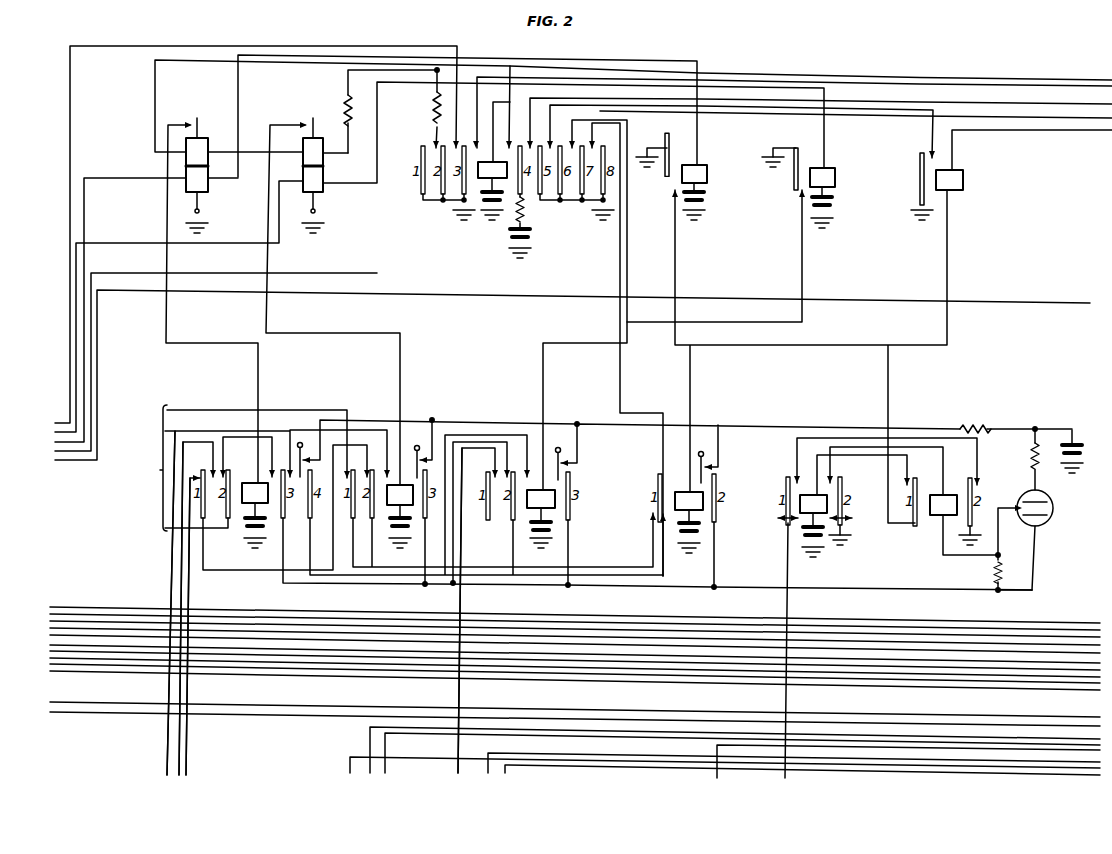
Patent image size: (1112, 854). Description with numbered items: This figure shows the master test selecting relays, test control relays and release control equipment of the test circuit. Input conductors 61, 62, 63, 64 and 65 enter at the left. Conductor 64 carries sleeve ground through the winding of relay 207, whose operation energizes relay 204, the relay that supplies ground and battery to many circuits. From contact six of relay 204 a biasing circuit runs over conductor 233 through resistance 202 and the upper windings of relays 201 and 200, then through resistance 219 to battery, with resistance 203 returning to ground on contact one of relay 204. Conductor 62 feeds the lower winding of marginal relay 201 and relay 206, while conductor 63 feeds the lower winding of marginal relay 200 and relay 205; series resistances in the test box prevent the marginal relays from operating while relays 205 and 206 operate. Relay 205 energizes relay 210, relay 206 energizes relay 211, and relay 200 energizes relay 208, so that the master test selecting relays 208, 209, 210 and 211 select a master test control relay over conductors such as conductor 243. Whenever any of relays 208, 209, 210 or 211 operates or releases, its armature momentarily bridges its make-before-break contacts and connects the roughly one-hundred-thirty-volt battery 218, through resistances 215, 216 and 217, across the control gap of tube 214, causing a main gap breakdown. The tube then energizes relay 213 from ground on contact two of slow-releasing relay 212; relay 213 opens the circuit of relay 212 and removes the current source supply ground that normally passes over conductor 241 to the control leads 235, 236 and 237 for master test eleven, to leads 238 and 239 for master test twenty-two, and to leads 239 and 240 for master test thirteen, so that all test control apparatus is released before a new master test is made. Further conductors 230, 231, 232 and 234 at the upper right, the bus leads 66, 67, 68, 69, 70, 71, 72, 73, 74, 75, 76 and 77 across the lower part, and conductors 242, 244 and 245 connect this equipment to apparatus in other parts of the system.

The input line 61 is at (70, 286).
The conductor 62 is at (76, 310).
The conductor 63 is at (84, 338).
The conductor 64 is at (92, 339).
The input line 65 is at (98, 362).
The bus line 66 is at (115, 607).
The bus line 67 is at (147, 615).
The bus line 68 is at (237, 622).
The bus line 69 is at (272, 629).
The bus line 70 is at (310, 637).
The bus line 71 is at (305, 648).
The bus line 72 is at (335, 653).
The bus line 73 is at (369, 660).
The bus line 74 is at (404, 666).
The bus line 75 is at (444, 673).
The bus line 76 is at (590, 711).
The bus line 77 is at (629, 721).
The relay 200 is at (208, 186).
The relay 201 is at (323, 186).
The resistance 202 is at (344, 101).
The resistance 203 is at (433, 107).
The relay 204 is at (478, 178).
The relay 205 is at (707, 177).
The relay 206 is at (835, 178).
The relay 207 is at (963, 180).
The master test selecting relay 208 is at (255, 483).
The master test selecting relay 209 is at (407, 485).
The master test selecting relay 210 is at (547, 510).
The master test selecting relay 211 is at (688, 490).
The slow release relay 212 is at (827, 513).
The relay 213 is at (932, 515).
The tube 214 is at (1046, 523).
The resistance 215 is at (1026, 457).
The resistance 216 is at (971, 423).
The resistance 217 is at (990, 568).
The battery 218 is at (1082, 442).
The resistance 219 is at (522, 215).
The output line 230 is at (1003, 77).
The output line 231 is at (1064, 83).
The output line 232 is at (1031, 107).
The conductor 233 is at (1018, 118).
The output line 234 is at (1090, 130).
The conductor 235 is at (350, 763).
The conductor 236 is at (368, 738).
The conductor 237 is at (385, 740).
The conductor 238 is at (717, 747).
The conductor 239 is at (546, 755).
The conductor 240 is at (606, 765).
The conductor 241 is at (786, 703).
The output line 242 is at (168, 693).
The conductor 243 is at (184, 692).
The output line 244 is at (187, 738).
The output line 245 is at (461, 694).